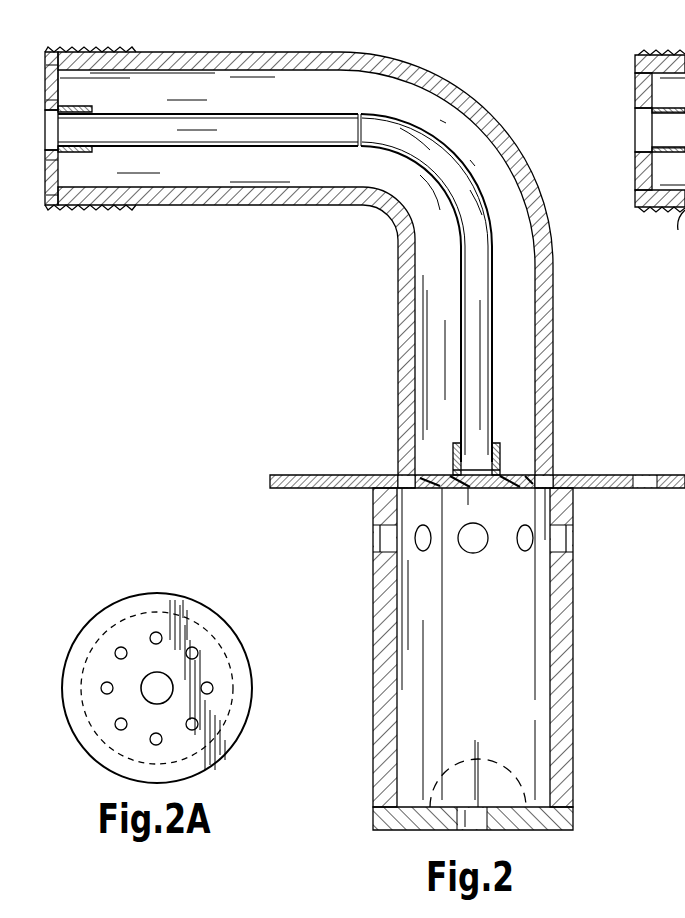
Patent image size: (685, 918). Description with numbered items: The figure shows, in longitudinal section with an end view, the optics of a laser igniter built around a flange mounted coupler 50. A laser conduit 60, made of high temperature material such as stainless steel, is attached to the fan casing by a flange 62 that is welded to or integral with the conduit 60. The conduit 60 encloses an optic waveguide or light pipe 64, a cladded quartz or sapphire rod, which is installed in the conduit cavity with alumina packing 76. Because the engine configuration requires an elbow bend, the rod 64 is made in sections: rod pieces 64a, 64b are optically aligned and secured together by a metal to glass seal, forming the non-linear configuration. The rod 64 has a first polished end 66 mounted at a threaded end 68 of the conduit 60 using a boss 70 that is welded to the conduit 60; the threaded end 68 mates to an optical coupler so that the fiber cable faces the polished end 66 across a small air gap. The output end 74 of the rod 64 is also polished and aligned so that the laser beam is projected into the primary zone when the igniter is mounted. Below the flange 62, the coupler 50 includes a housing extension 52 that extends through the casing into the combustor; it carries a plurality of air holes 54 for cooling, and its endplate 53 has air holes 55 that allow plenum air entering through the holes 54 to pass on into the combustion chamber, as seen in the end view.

In FIG. 2, the flange mounted coupler 50 is at (190, 362).
In FIG. 2, the housing extension 52 is at (573, 742).
In FIG. 2, the endplate 53 is at (545, 830).
In FIG. 2A, the endplate 53 is at (232, 735).
In FIG. 2, the air holes 54 is at (524, 551).
In FIG. 2, the air holes 55 is at (480, 757).
In FIG. 2A, the air holes 55 is at (210, 685).
In FIG. 2, the laser conduit 60 is at (566, 249).
In FIG. 2, the flange 62 is at (678, 475).
In FIG. 2, the optic waveguide or light pipe 64 is at (476, 160).
In FIG. 2, the rod piece 64a is at (346, 114).
In FIG. 2, the rod piece 64b is at (465, 255).
In FIG. 2, the first polished end 66 is at (67, 101).
In FIG. 2, the threaded end 68 is at (68, 205).
In FIG. 2, the boss 70 is at (82, 147).
In FIG. 2, the output end 74 is at (492, 468).
In FIG. 2, the alumina packing 76 is at (292, 180).